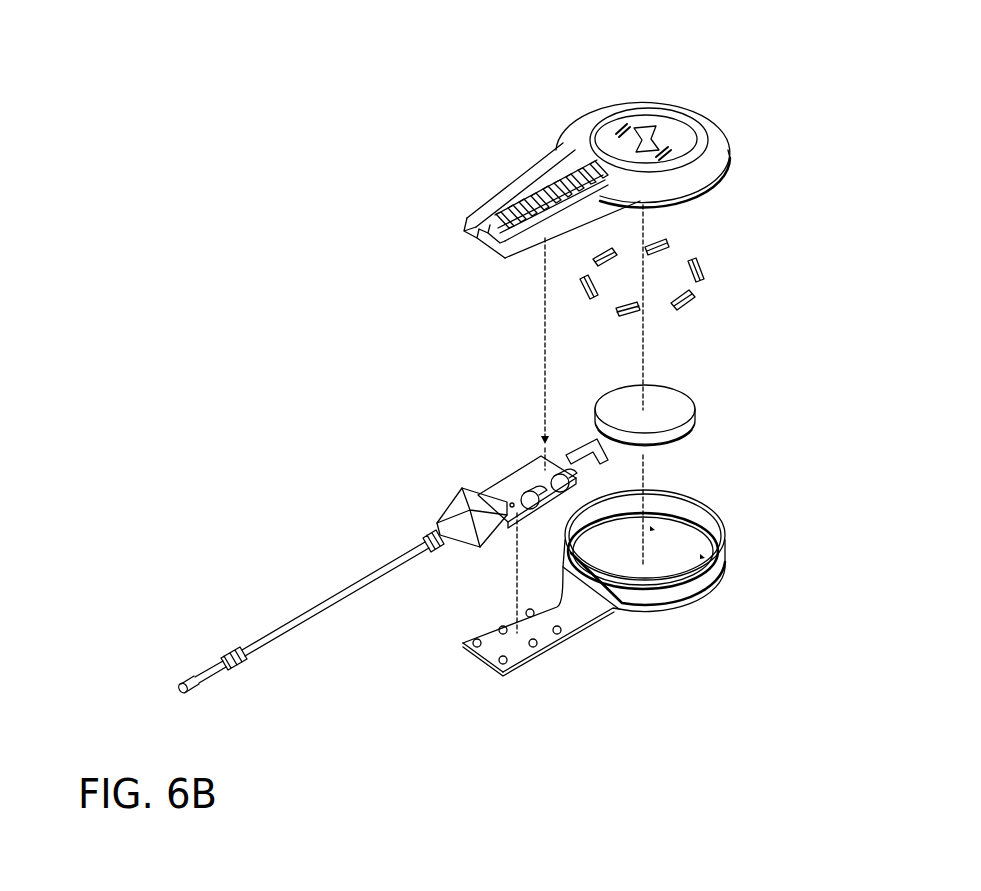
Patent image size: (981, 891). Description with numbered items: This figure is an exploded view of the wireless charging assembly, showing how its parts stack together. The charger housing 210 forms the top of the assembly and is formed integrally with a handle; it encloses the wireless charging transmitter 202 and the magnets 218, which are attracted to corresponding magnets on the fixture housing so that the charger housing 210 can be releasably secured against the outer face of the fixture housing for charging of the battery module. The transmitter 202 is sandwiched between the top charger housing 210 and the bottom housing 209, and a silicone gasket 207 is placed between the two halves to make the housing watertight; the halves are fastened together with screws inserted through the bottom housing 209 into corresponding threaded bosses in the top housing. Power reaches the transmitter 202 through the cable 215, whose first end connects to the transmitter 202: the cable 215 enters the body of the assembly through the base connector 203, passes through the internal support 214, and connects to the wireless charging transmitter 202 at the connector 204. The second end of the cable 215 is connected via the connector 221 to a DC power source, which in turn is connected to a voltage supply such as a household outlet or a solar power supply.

The charger housing 210 is at (678, 130).
The magnets 218 is at (687, 297).
The wireless charging transmitter 202 is at (672, 411).
The silicone gasket 207 is at (716, 499).
The bottom housing 209 is at (692, 612).
The base connector 203 is at (452, 494).
The internal support 214 is at (532, 478).
The connector 204 is at (575, 430).
The cable 215 is at (317, 605).
The connector 221 is at (197, 675).